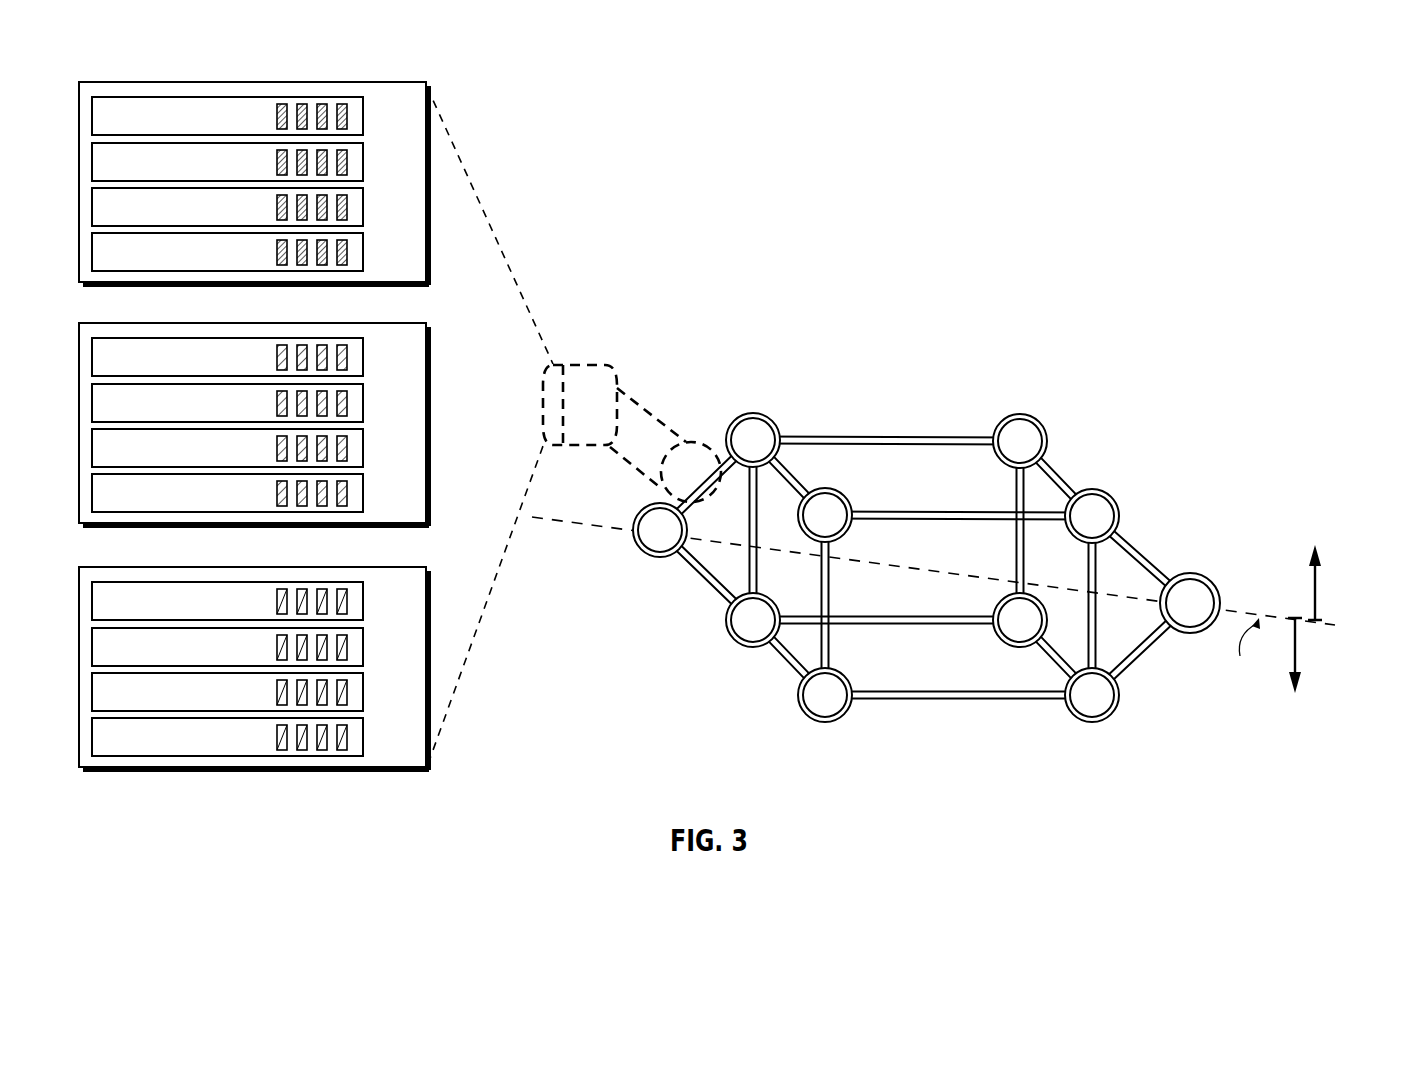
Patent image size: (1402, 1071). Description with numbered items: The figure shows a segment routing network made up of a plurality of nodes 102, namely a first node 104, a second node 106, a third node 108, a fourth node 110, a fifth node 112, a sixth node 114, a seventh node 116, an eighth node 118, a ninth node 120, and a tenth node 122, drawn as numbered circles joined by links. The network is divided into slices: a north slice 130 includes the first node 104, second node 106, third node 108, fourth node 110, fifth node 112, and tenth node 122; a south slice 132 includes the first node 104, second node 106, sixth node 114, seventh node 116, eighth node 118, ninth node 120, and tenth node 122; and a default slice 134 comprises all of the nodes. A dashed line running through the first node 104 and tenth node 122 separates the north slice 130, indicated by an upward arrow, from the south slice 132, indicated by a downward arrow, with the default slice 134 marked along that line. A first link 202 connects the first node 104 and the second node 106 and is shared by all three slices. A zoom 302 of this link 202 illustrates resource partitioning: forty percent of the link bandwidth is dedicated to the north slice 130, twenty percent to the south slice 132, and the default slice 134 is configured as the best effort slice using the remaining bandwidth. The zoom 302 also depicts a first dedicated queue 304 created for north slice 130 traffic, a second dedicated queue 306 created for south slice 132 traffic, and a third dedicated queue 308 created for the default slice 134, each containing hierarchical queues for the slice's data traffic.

The nodes 102 is at (714, 660).
The first node 104 is at (633, 531).
The second node 106 is at (754, 413).
The third node 108 is at (1021, 414).
The fourth node 110 is at (1084, 490).
The fifth node 112 is at (852, 507).
The sixth node 114 is at (752, 648).
The seventh node 116 is at (995, 628).
The eighth node 118 is at (1093, 722).
The ninth node 120 is at (825, 722).
The tenth node 122 is at (1213, 586).
The north slice 130 is at (1317, 592).
The south slice 132 is at (1297, 656).
The default slice 134 is at (1242, 653).
The first link 202 is at (695, 442).
The zoom 302 is at (481, 623).
The first dedicated queue 304 is at (84, 82).
The second dedicated queue 306 is at (84, 323).
The third dedicated queue 308 is at (84, 567).